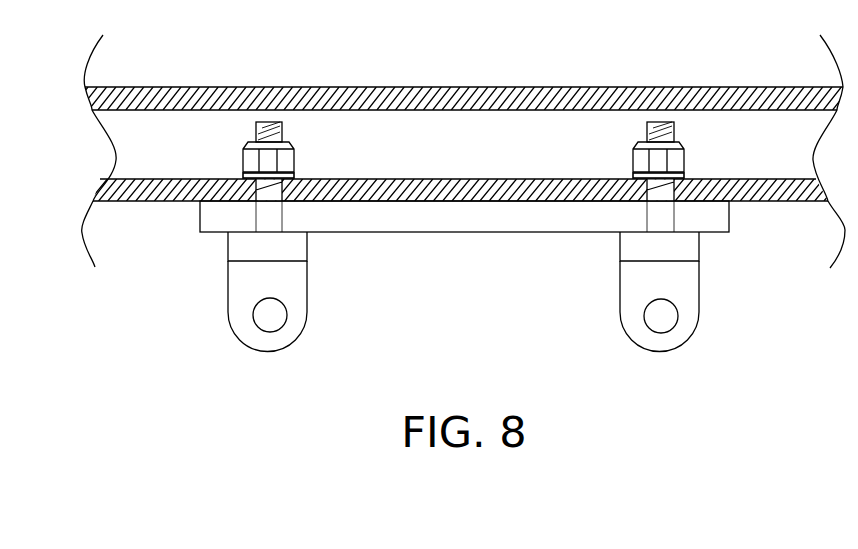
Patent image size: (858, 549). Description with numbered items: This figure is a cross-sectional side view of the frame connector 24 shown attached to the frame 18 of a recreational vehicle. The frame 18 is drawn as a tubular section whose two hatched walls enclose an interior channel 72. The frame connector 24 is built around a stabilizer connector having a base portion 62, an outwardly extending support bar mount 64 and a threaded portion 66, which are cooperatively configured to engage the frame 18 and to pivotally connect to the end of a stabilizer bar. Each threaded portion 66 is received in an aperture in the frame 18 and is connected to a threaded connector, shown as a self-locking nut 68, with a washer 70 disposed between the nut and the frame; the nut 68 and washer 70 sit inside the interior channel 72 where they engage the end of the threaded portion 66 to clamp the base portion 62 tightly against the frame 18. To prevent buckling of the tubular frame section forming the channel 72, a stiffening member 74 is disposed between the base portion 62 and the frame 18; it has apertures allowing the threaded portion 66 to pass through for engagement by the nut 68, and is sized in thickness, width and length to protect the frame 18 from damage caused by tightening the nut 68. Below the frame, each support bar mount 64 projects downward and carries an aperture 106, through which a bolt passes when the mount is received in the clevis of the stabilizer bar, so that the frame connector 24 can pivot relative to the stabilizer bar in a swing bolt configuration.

The frame 18 is at (192, 86).
The interior channel 72 is at (123, 138).
The self-locking nut 68 is at (287, 162).
The washer 70 is at (633, 176).
The threaded portion 66 is at (649, 126).
The stiffening member 74 is at (472, 222).
The base portion 62 is at (696, 245).
The support bar mount 64 is at (696, 303).
The aperture 106 is at (660, 323).
The frame connector 24 is at (196, 302).